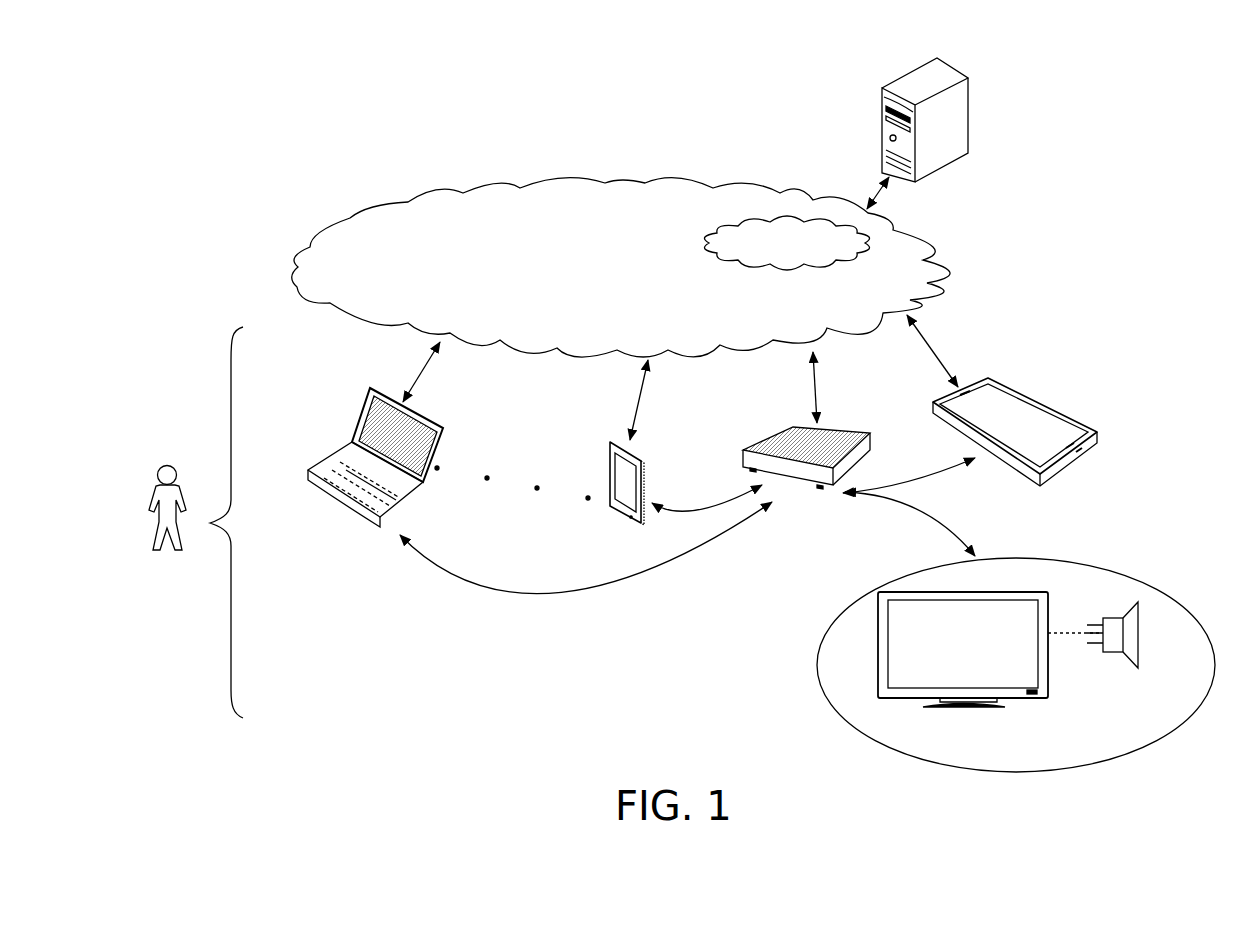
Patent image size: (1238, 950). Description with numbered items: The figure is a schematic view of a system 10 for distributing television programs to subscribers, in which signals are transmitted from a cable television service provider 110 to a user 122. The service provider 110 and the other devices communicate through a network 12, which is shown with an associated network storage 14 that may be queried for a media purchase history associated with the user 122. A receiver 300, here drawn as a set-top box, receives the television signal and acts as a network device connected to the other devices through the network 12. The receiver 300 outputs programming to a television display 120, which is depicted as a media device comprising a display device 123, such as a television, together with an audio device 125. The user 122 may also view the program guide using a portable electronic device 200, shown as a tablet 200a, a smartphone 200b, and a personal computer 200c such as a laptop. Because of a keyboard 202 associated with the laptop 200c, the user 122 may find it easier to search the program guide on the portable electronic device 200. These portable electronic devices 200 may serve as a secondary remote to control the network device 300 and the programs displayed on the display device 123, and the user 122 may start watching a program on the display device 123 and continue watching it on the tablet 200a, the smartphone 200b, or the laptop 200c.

The system 10 is at (338, 108).
The network 12 is at (503, 183).
The network storage 14 is at (832, 268).
The cable television service provider 110 is at (920, 62).
The portable electronic device 200 is at (691, 426).
The tablet 200a is at (1013, 387).
The smartphone 200b is at (610, 452).
The personal computer 200c is at (360, 423).
The keyboard 202 is at (390, 497).
The receiver 300 is at (750, 449).
The television display 120 is at (1122, 572).
The display device 123 is at (1014, 702).
The audio device 125 is at (1140, 633).
The user 122 is at (153, 517).